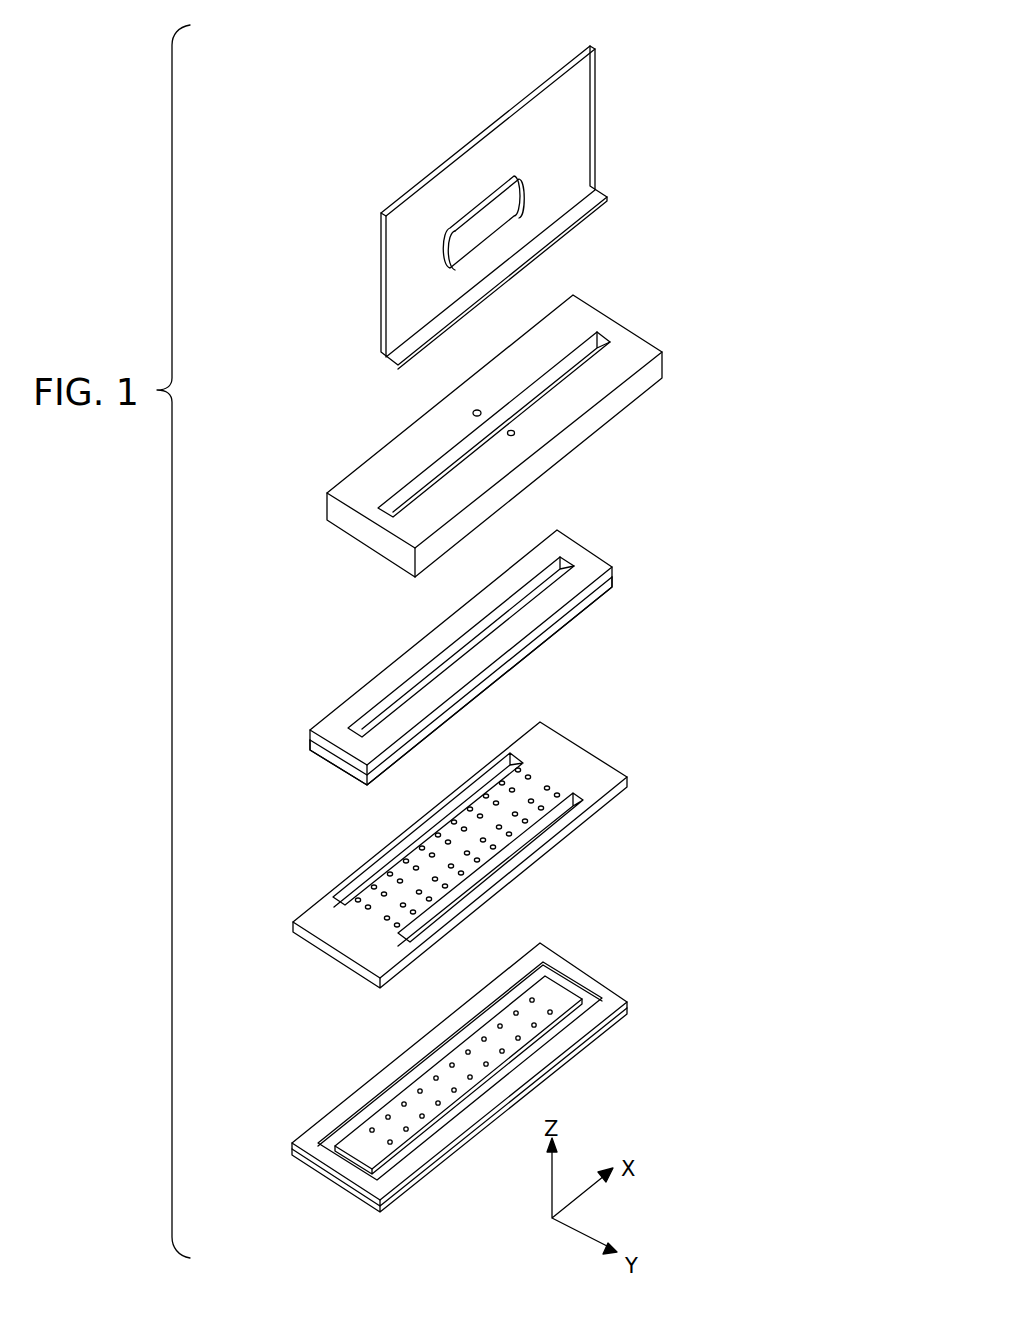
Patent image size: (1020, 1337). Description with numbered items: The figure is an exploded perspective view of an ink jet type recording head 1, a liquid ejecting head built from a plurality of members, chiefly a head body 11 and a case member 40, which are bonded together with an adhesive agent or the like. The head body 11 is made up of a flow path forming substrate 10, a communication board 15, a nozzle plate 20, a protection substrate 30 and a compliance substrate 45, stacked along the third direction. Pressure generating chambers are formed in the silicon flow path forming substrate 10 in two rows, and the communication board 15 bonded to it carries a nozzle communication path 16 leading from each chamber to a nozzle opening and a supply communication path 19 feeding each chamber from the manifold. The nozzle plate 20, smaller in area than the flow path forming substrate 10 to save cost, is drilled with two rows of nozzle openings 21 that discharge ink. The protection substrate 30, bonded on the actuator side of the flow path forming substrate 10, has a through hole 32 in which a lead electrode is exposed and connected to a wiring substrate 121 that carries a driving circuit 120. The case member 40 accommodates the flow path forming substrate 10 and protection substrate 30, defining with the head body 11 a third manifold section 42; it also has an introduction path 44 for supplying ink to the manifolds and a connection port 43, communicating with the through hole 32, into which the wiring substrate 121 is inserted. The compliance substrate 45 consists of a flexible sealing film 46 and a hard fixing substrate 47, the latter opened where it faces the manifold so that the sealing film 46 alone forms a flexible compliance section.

The ink jet type recording head 1 is at (697, 130).
The flow path forming substrate 10 is at (323, 755).
The head body 11 is at (762, 530).
The communication board 15 is at (502, 839).
The nozzle communication path 16 is at (547, 790).
The supply communication path 19 is at (557, 795).
The nozzle plate 20 is at (486, 1061).
The nozzle openings 21 is at (418, 1088).
The protection substrate 30 is at (505, 657).
The through hole 32 is at (527, 603).
The case member 40 is at (650, 373).
The third manifold section 42 is at (550, 820).
The connection port 43 is at (421, 483).
The introduction path 44 is at (512, 430).
The compliance substrate 45 is at (522, 1077).
The sealing film 46 is at (628, 1002).
The fixing substrate 47 is at (628, 1008).
The driving circuit 120 is at (457, 240).
The wiring substrate 121 is at (392, 311).